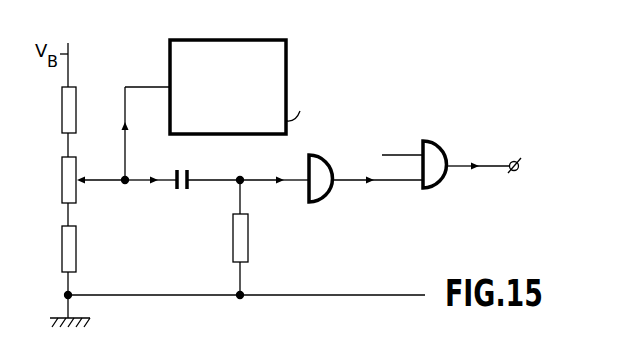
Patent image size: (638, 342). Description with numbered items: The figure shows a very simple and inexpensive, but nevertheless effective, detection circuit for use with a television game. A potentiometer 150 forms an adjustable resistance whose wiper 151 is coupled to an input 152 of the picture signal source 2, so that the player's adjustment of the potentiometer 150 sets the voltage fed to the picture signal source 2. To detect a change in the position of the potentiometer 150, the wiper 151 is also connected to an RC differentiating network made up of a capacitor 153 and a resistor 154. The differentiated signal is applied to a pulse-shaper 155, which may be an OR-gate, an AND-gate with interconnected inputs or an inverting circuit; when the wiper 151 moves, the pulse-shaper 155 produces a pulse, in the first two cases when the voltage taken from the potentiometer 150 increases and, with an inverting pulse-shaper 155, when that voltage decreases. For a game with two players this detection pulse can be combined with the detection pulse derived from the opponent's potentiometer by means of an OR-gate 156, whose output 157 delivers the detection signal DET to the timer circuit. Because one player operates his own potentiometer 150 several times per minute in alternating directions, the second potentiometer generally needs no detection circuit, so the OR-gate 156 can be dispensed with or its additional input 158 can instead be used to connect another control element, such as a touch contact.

The picture signal source 2 is at (224, 40).
The potentiometer 150 is at (62, 171).
The wiper 151 is at (79, 177).
The input 152 is at (169, 87).
The RC differentiating network capacitor 153 is at (175, 184).
The RC differentiating network resistor 154 is at (233, 226).
The pulse-shaper 155 is at (331, 185).
The OR-gate 156 is at (443, 157).
The output 157 is at (462, 170).
The additional input 158 is at (402, 155).